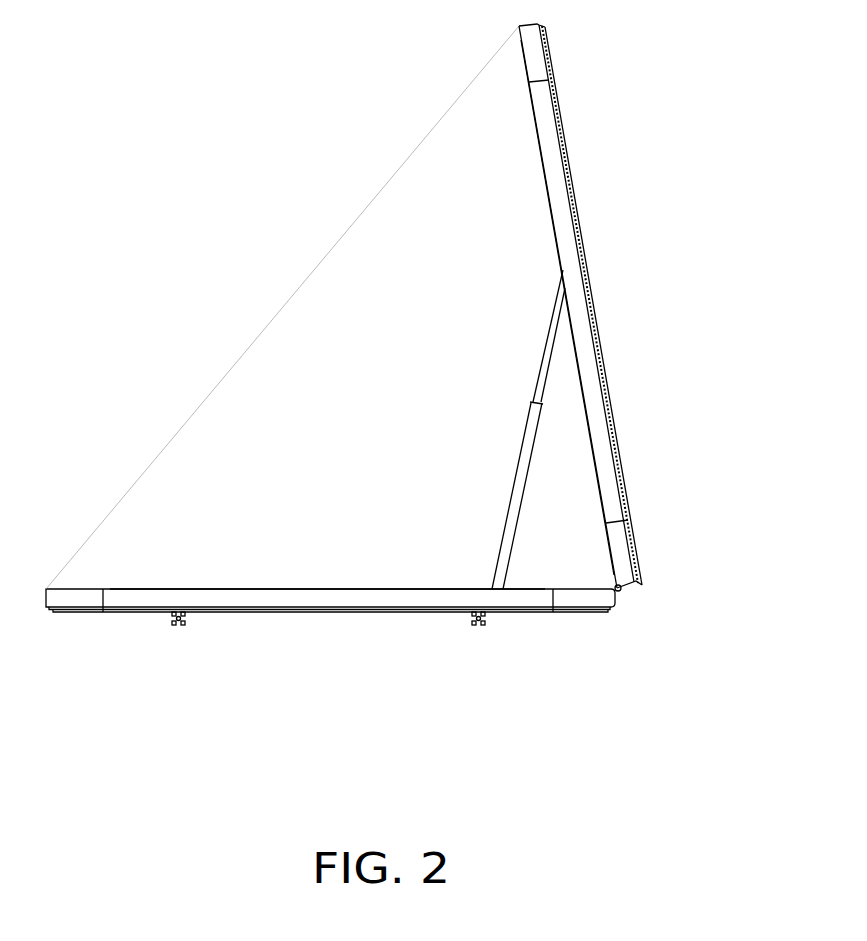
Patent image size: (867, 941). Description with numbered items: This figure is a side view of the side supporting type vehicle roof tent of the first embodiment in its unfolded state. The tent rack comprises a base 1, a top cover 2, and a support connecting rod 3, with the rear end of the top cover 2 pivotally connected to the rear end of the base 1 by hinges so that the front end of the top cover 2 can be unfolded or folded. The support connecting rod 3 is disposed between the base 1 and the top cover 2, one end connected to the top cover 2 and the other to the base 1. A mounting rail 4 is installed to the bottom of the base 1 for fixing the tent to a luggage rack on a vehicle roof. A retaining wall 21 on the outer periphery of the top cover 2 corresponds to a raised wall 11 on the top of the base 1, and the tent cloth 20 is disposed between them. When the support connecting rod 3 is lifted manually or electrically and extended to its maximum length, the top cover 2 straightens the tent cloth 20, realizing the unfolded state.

The base 1 is at (438, 615).
The raised wall 11 is at (296, 612).
The top cover 2 is at (583, 258).
The tent cloth 20 is at (312, 268).
The retaining wall 21 is at (553, 155).
The support connecting rod 3 is at (532, 442).
The mounting rail 4 is at (178, 624).